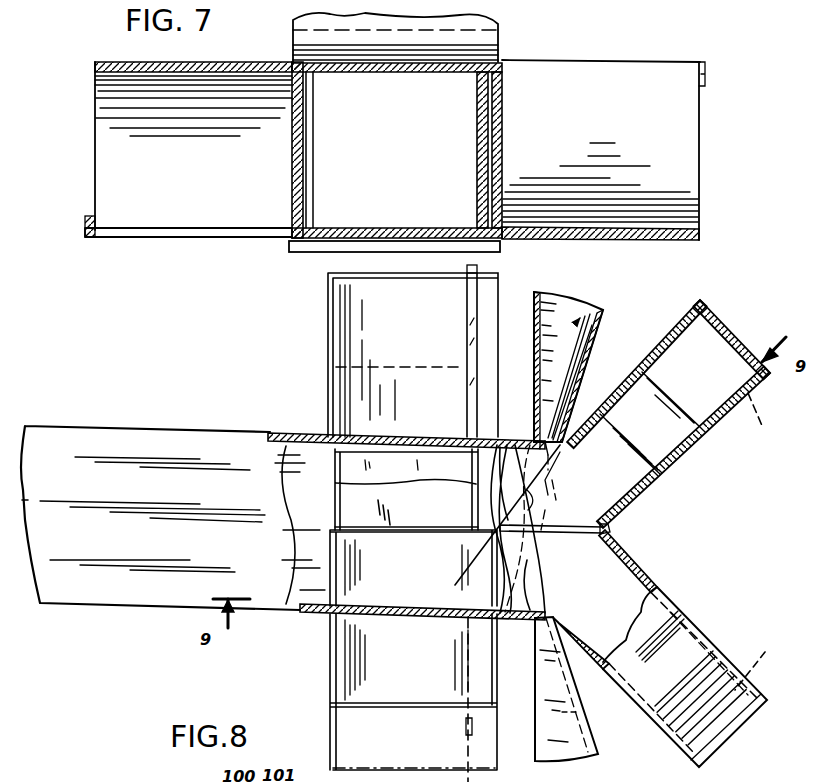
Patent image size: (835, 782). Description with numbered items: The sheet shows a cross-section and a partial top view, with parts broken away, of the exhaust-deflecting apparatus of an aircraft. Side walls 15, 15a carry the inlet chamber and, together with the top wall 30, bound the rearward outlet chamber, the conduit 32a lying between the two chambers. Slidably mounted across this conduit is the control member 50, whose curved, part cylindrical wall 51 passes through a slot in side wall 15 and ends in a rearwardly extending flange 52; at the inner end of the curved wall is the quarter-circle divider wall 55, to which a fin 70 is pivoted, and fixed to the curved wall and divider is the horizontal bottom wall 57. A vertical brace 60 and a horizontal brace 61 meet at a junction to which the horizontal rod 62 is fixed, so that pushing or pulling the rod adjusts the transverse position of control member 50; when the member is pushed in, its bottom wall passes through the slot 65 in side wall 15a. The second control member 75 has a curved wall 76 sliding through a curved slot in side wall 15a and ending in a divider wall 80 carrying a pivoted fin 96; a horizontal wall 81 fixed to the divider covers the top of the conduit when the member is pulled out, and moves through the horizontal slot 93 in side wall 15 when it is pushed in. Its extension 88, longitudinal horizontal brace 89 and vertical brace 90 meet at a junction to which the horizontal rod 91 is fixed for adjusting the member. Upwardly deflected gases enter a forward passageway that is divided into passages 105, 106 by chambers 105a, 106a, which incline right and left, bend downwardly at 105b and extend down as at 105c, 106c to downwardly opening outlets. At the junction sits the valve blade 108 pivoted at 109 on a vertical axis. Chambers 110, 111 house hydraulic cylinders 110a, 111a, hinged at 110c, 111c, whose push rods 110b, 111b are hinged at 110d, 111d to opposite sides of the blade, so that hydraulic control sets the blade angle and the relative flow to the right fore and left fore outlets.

In FIG. 7, the side wall 15 is at (293, 192).
In FIG. 8, the side wall 15 is at (310, 616).
In FIG. 7, the side wall 15a is at (500, 171).
In FIG. 8, the side wall 15a is at (290, 433).
In FIG. 8, the top wall 30 is at (112, 604).
In FIG. 7, the conduit 32a is at (348, 254).
In FIG. 7, the control member 50 is at (157, 146).
In FIG. 8, the control member 50 is at (326, 671).
In FIG. 7, the curved wall 51 is at (127, 133).
In FIG. 8, the curved wall 51 is at (406, 636).
In FIG. 7, the flange 52 is at (178, 238).
In FIG. 7, the divider wall 55 is at (314, 162).
In FIG. 8, the divider wall 55 is at (435, 537).
In FIG. 7, the bottom wall 57 is at (366, 230).
In FIG. 8, the bottom wall 57 is at (406, 510).
In FIG. 8, the vertical brace 60 is at (472, 705).
In FIG. 7, the horizontal brace 61 is at (85, 225).
In FIG. 8, the horizontal brace 61 is at (398, 706).
In FIG. 8, the horizontal rod 62 is at (466, 720).
In FIG. 7, the slot 65 is at (500, 238).
In FIG. 8, the fin 70 is at (478, 522).
In FIG. 7, the second control member 75 is at (625, 159).
In FIG. 8, the second control member 75 is at (390, 351).
In FIG. 7, the curved wall 76 is at (603, 150).
In FIG. 8, the curved wall 76 is at (398, 350).
In FIG. 7, the divider wall 80 is at (480, 175).
In FIG. 8, the divider wall 80 is at (430, 456).
In FIG. 7, the horizontal wall 81 is at (425, 76).
In FIG. 8, the horizontal wall 81 is at (406, 489).
In FIG. 8, the horizontal extension 88 is at (470, 352).
In FIG. 7, the longitudinal horizontal brace 89 is at (706, 86).
In FIG. 8, the longitudinal horizontal brace 89 is at (357, 280).
In FIG. 8, the vertical brace 90 is at (480, 268).
In FIG. 8, the horizontal rod 91 is at (467, 272).
In FIG. 7, the horizontal slot 93 is at (295, 58).
In FIG. 8, the fin 96 is at (470, 432).
In FIG. 8, the passage 105 is at (671, 648).
In FIG. 8, the chamber 105a is at (662, 585).
In FIG. 8, the bend 105b is at (720, 726).
In FIG. 8, the downward extension 105c is at (761, 656).
In FIG. 8, the passage 106 is at (681, 414).
In FIG. 8, the chamber 106a is at (636, 371).
In FIG. 8, the downward extension 106c is at (771, 421).
In FIG. 8, the valve blade 108 is at (563, 506).
In FIG. 8, the pivot 109 is at (603, 522).
In FIG. 8, the chamber 110 is at (539, 608).
In FIG. 8, the hydraulic cylinder 110a is at (603, 713).
In FIG. 8, the push rod 110b is at (530, 561).
In FIG. 8, the hinge 110c is at (548, 611).
In FIG. 8, the hinge 110d is at (493, 519).
In FIG. 8, the chamber 111 is at (595, 357).
In FIG. 8, the hydraulic cylinder 111a is at (593, 328).
In FIG. 8, the push rod 111b is at (550, 483).
In FIG. 8, the hinge 111c is at (535, 438).
In FIG. 8, the hinge 111d is at (528, 513).